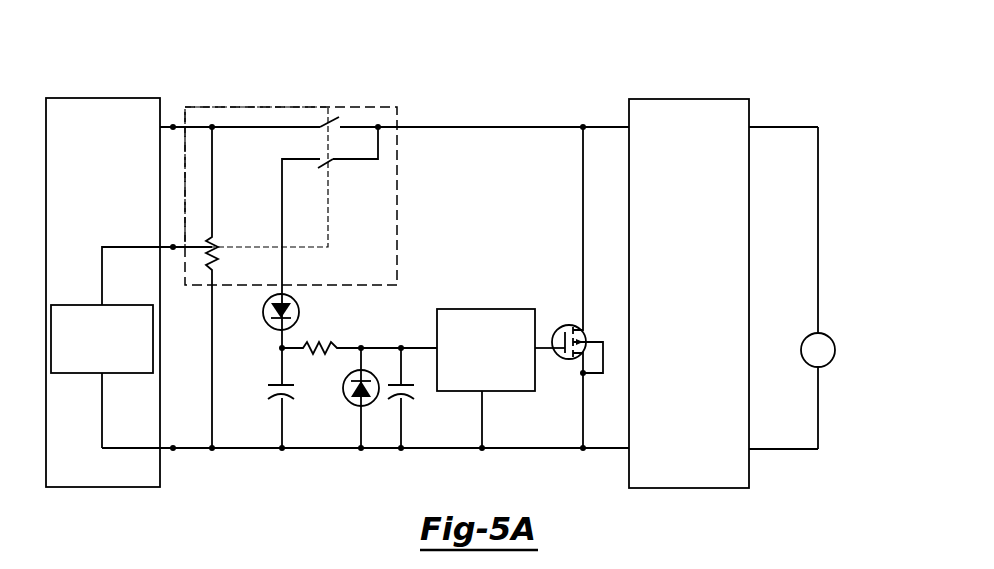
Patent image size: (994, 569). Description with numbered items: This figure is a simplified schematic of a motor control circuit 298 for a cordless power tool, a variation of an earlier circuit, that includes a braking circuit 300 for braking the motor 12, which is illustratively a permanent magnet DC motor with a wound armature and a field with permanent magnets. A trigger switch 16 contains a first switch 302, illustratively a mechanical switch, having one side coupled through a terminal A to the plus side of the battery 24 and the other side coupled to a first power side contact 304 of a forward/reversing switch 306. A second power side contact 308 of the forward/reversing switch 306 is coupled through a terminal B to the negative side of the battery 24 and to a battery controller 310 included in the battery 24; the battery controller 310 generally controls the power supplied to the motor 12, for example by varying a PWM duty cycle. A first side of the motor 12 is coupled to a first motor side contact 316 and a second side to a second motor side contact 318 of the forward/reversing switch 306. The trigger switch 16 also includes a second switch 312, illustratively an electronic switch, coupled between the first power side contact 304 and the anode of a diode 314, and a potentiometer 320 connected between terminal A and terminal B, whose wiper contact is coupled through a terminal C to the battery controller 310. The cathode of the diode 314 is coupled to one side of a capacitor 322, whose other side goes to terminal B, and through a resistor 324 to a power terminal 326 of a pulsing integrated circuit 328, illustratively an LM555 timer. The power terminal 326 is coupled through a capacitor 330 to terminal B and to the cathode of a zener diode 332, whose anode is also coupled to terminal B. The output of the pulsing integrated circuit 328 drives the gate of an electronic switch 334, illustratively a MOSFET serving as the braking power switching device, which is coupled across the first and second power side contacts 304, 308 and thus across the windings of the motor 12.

The motor 12 is at (835, 345).
The trigger switch 16 is at (381, 106).
The battery 24 is at (123, 97).
The motor control circuit 298 is at (496, 86).
The braking circuit 300 is at (476, 270).
The first switch 302 is at (338, 116).
The first power side contact 304 is at (628, 126).
The forward/reversing switch 306 is at (716, 110).
The second power side contact 308 is at (628, 450).
The battery controller 310 is at (73, 304).
The second switch 312 is at (333, 161).
The diode 314 is at (268, 320).
The first motor side contact 316 is at (750, 126).
The second motor side contact 318 is at (750, 450).
The potentiometer 320 is at (212, 236).
The capacitor 322 is at (270, 385).
The resistor 324 is at (323, 342).
The power terminal 326 is at (437, 346).
The pulsing integrated circuit 328 is at (465, 308).
The capacitor 330 is at (406, 394).
The zener diode 332 is at (354, 396).
The electronic switch 334 is at (559, 358).
The terminal A is at (173, 127).
The terminal B is at (173, 448).
The terminal C is at (173, 247).